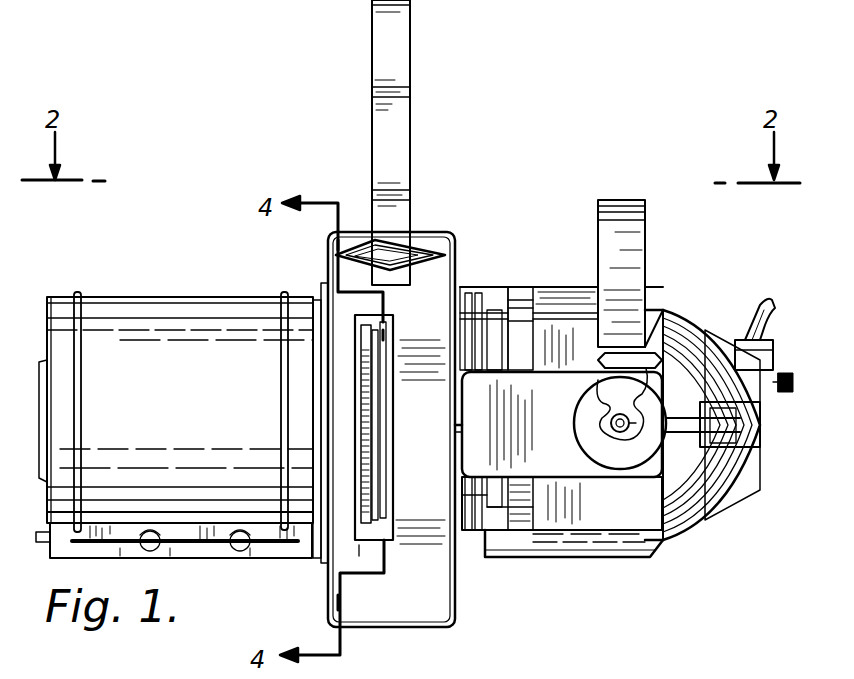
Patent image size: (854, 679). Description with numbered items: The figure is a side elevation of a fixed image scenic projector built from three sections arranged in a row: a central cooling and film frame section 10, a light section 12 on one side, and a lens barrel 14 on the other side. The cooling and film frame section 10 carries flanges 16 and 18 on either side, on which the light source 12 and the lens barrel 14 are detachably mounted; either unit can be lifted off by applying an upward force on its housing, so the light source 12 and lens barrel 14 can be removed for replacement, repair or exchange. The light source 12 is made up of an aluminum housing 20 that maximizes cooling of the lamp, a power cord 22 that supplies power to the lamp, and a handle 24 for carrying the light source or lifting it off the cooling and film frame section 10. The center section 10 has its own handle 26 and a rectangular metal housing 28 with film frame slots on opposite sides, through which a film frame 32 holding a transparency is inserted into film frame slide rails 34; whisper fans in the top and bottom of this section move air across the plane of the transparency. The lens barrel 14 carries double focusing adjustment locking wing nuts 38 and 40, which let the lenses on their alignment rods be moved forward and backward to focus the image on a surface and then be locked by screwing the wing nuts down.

The cooling and film frame section 10 is at (437, 218).
The light section 12 is at (529, 270).
The lens barrel 14 is at (159, 290).
The flange 16 is at (466, 550).
The flange 18 is at (364, 505).
The aluminum housing 20 is at (600, 560).
The power cord 22 is at (745, 306).
The handle 24 is at (635, 200).
The handle 26 is at (411, 52).
The rectangular metal housing 28 is at (446, 272).
The film frame 32 is at (378, 498).
The film frame slide rails 34 is at (364, 479).
The focus adjusting locking wing nut 38 is at (137, 544).
The focus adjusting locking wing nut 40 is at (232, 560).